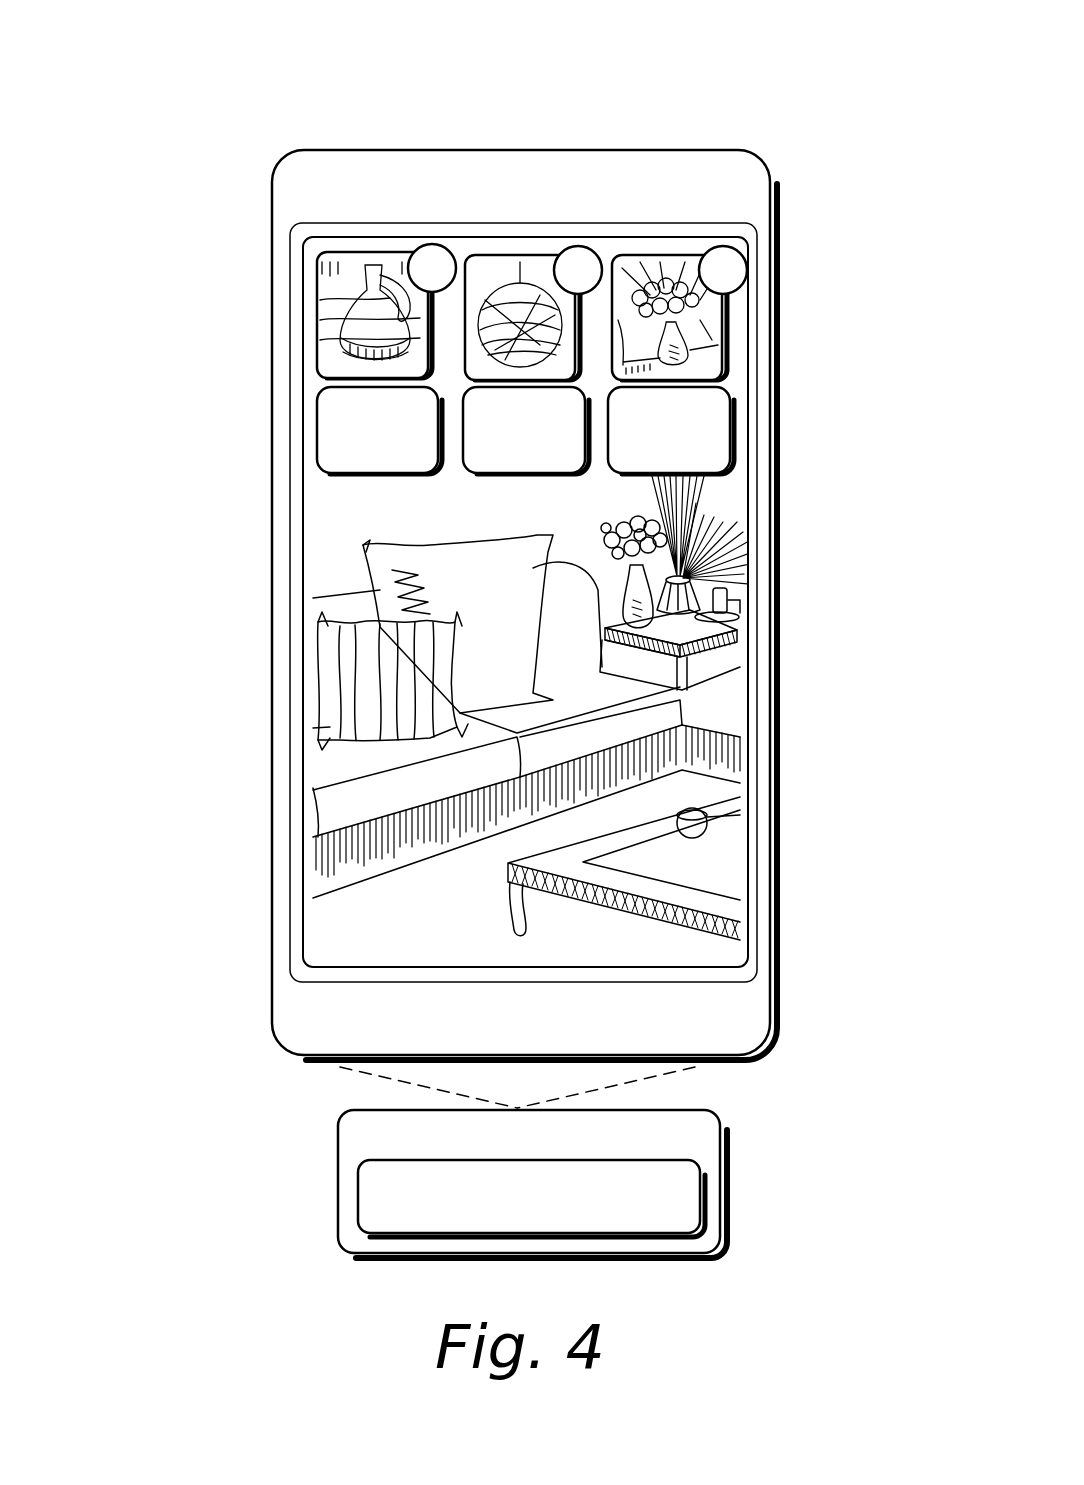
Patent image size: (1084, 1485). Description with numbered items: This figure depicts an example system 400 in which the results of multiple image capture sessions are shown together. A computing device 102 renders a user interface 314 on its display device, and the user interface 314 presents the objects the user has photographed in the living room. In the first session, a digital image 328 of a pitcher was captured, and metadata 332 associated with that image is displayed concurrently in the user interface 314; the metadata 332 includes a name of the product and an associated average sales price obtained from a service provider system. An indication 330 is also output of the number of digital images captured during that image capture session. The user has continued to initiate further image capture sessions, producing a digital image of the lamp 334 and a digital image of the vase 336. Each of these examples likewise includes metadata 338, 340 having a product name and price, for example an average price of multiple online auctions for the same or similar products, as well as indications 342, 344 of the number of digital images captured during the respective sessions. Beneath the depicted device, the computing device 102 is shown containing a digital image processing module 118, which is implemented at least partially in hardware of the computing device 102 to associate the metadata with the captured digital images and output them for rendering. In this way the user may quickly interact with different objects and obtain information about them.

The example system 400 is at (153, 52).
The user interface 314 is at (433, 967).
The digital image 328 is at (332, 254).
The indication 330 is at (413, 252).
The metadata 332 is at (380, 475).
The digital image of the lamp 334 is at (485, 254).
The indication 342 is at (567, 252).
The metadata 338 is at (525, 475).
The digital image of the vase 336 is at (653, 254).
The indication 344 is at (737, 252).
The metadata 340 is at (680, 475).
The computing device 102 is at (532, 1184).
The digital image processing module 118 is at (531, 1198).